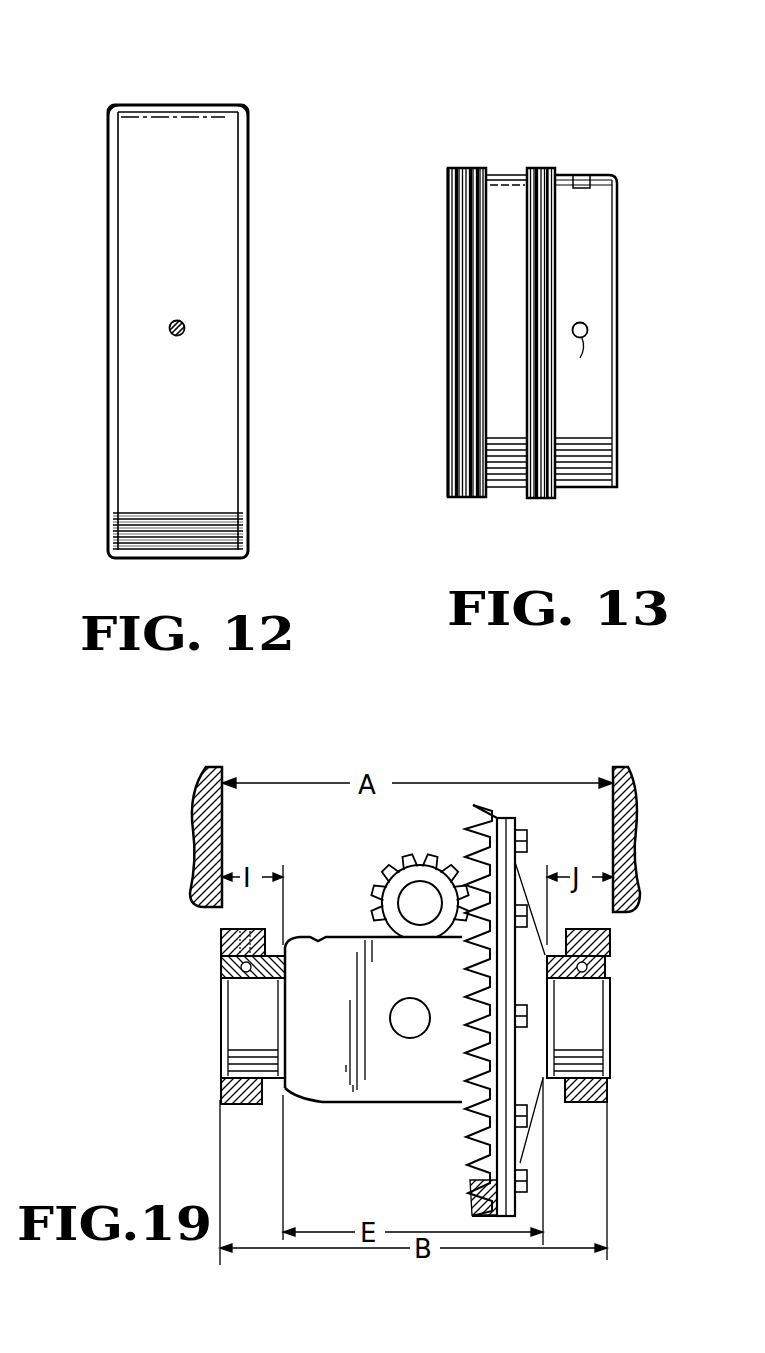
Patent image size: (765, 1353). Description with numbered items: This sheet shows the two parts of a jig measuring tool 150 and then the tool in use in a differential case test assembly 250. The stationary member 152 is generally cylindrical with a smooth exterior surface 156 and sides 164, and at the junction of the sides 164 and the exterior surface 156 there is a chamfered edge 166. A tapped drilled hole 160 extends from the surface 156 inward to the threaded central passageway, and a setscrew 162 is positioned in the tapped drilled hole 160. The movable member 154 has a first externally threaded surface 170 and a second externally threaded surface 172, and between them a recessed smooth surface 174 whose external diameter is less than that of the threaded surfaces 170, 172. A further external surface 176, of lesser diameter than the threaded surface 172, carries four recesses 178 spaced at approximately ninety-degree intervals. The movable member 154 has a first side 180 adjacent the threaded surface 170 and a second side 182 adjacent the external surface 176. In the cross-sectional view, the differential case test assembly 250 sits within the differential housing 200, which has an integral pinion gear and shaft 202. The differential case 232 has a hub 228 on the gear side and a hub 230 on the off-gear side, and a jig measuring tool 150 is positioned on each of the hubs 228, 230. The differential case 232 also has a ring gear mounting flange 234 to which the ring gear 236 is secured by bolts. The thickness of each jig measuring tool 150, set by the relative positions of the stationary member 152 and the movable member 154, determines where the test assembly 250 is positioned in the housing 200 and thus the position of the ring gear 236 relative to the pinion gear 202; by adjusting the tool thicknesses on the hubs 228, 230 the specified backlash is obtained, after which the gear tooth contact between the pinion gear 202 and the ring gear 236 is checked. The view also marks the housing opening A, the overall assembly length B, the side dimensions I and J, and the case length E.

In FIG. 12, the stationary member 152 is at (252, 356).
In FIG. 19, the stationary member 152 is at (218, 937).
In FIG. 13, the movable member 154 is at (541, 292).
In FIG. 19, the movable member 154 is at (222, 965).
In FIG. 12, the smooth exterior surface 156 is at (178, 105).
In FIG. 12, the tapped drilled hole 160 is at (181, 337).
In FIG. 12, the setscrew 162 is at (177, 320).
In FIG. 12, the sides 164 is at (248, 193).
In FIG. 12, the chamfered edge 166 is at (113, 105).
In FIG. 13, the first externally threaded surface 170 is at (465, 168).
In FIG. 13, the second externally threaded surface 172 is at (543, 168).
In FIG. 13, the recessed smooth surface 174 is at (500, 175).
In FIG. 13, the further external surface 176 is at (603, 173).
In FIG. 13, the recesses 178 is at (598, 150).
In FIG. 13, the first side 180 is at (447, 305).
In FIG. 13, the second side 182 is at (622, 380).
In FIG. 19, the differential housing 200 is at (195, 824).
In FIG. 19, the pinion gear and shaft 202 is at (375, 868).
In FIG. 19, the hub 228 is at (276, 1028).
In FIG. 19, the hub 230 is at (600, 1010).
In FIG. 19, the differential case 232 is at (372, 1105).
In FIG. 19, the ring gear mounting flange 234 is at (512, 1186).
In FIG. 19, the ring gear 236 is at (462, 1132).
In FIG. 19, the differential case test assembly 250 is at (290, 945).
In FIG. 19, the jig measuring tool 150 is at (221, 1098).